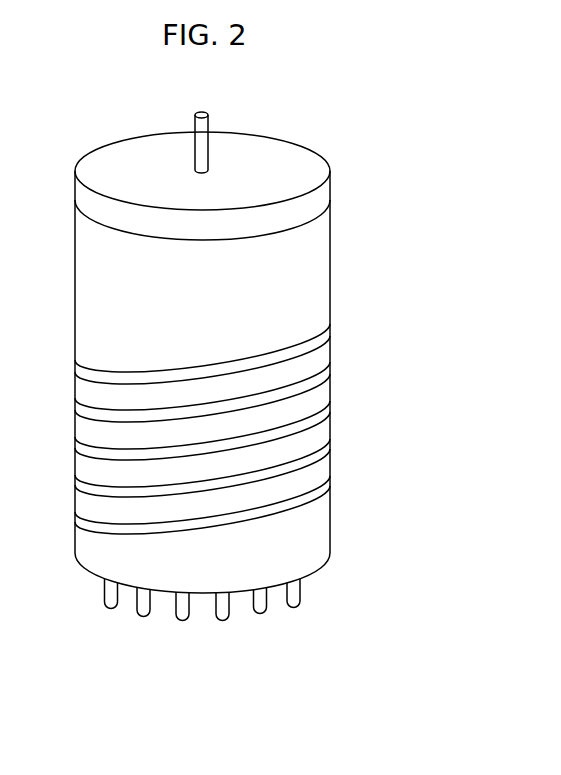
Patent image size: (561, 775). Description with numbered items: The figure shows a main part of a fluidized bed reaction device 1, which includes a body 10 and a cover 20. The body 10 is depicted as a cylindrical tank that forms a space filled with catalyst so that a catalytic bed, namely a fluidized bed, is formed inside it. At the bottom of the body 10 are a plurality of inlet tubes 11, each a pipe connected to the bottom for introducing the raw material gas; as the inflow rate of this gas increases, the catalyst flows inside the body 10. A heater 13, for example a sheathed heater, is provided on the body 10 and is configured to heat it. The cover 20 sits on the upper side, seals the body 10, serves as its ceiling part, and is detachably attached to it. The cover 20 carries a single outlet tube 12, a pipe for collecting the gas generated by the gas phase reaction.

The fluidized bed reaction device 1 is at (248, 373).
The body 10 is at (330, 270).
The inlet tubes 11 is at (262, 613).
The outlet tube 12 is at (208, 126).
The heater 13 is at (260, 400).
The cover 20 is at (310, 157).